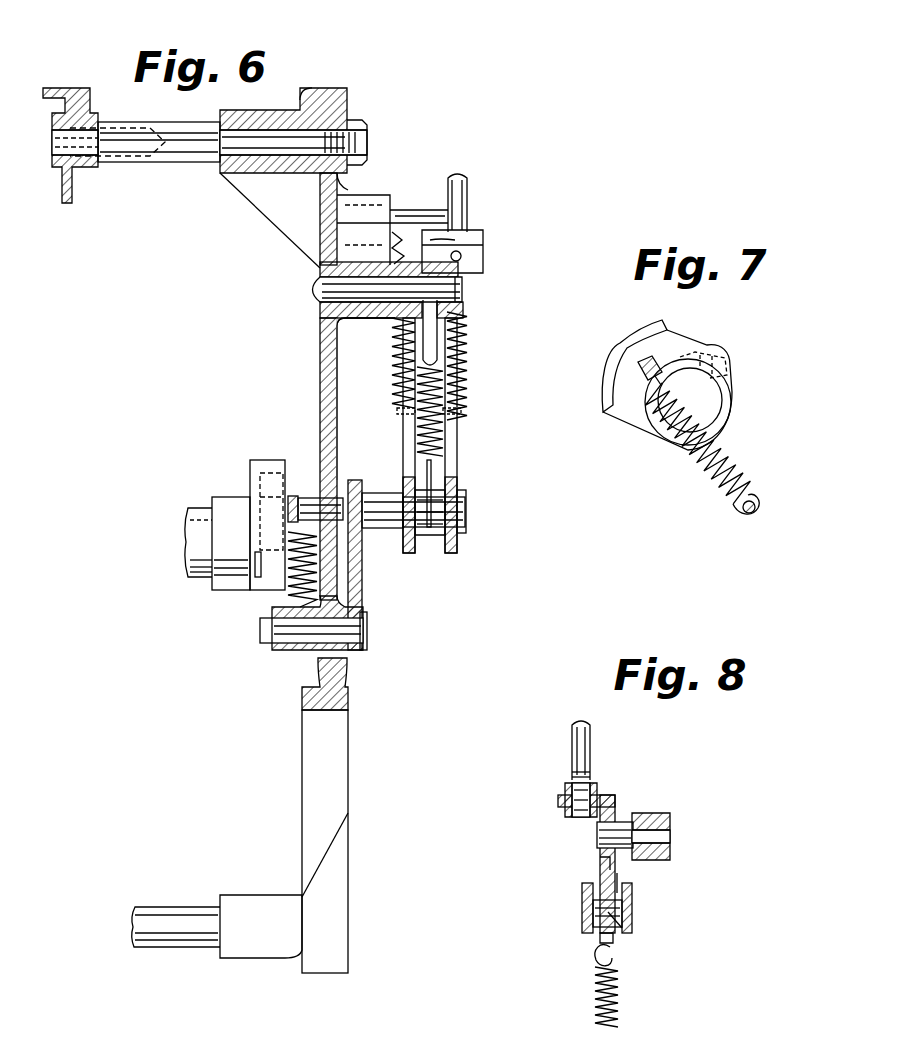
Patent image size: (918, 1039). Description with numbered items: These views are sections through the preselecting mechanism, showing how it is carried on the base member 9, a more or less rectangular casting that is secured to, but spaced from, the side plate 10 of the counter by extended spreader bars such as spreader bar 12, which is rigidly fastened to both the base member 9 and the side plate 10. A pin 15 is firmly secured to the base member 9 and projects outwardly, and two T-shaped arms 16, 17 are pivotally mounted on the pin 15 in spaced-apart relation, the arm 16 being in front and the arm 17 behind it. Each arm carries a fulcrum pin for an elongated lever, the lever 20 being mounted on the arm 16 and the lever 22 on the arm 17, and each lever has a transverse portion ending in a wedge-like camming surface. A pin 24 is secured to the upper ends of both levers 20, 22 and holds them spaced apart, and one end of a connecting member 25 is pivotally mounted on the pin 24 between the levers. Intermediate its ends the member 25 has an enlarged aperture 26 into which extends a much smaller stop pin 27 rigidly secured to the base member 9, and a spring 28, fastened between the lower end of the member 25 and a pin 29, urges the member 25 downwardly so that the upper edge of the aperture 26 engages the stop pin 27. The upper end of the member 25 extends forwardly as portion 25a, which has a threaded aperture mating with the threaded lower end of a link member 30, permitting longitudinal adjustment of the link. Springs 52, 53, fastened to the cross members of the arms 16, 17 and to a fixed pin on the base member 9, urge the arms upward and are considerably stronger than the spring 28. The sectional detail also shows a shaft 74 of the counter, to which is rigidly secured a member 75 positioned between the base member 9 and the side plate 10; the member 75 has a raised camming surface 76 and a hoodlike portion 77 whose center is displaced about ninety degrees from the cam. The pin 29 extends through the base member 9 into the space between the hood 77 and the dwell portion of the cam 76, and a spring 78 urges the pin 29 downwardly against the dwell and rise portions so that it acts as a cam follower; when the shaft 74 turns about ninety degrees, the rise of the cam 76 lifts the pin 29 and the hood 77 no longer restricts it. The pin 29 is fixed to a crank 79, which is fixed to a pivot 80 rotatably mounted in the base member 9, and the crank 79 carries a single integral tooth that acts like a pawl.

In FIG. 6, the base member 9 is at (319, 340).
In FIG. 6, the side plate 10 is at (68, 187).
In FIG. 6, the spreader bar 12 is at (197, 160).
In FIG. 6, the pin 15 is at (462, 288).
In FIG. 6, the arm 16 is at (457, 455).
In FIG. 8, the arm 16 is at (582, 920).
In FIG. 6, the arm 17 is at (403, 449).
In FIG. 8, the arm 17 is at (628, 912).
In FIG. 8, the lever 20 is at (600, 934).
In FIG. 8, the lever 22 is at (618, 875).
In FIG. 8, the pin 24 is at (622, 927).
In FIG. 6, the connecting member 25 is at (438, 342).
In FIG. 8, the connecting member 25 is at (608, 800).
In FIG. 6, the forwardly-extending portion 25a is at (480, 228).
In FIG. 8, the forwardly-extending portion 25a is at (557, 803).
In FIG. 8, the enlarged aperture 26 is at (600, 859).
In FIG. 8, the stop pin 27 is at (597, 831).
In FIG. 6, the spring 28 is at (444, 390).
In FIG. 8, the spring 28 is at (618, 993).
In FIG. 6, the pin 29 is at (317, 508).
In FIG. 7, the pin 29 is at (638, 366).
In FIG. 6, the link member 30 is at (465, 195).
In FIG. 8, the link member 30 is at (586, 743).
In FIG. 6, the spring 52 is at (464, 396).
In FIG. 6, the spring 53 is at (397, 373).
In FIG. 6, the shaft 74 is at (195, 506).
In FIG. 7, the shaft 74 is at (716, 402).
In FIG. 6, the member 75 is at (222, 495).
In FIG. 7, the member 75 is at (732, 430).
In FIG. 6, the camming surface 76 is at (272, 483).
In FIG. 7, the camming surface 76 is at (730, 357).
In FIG. 6, the hoodlike portion 77 is at (260, 458).
In FIG. 7, the hoodlike portion 77 is at (628, 343).
In FIG. 6, the spring 78 is at (295, 593).
In FIG. 7, the spring 78 is at (738, 476).
In FIG. 6, the crank 79 is at (361, 583).
In FIG. 6, the pivot 80 is at (364, 633).